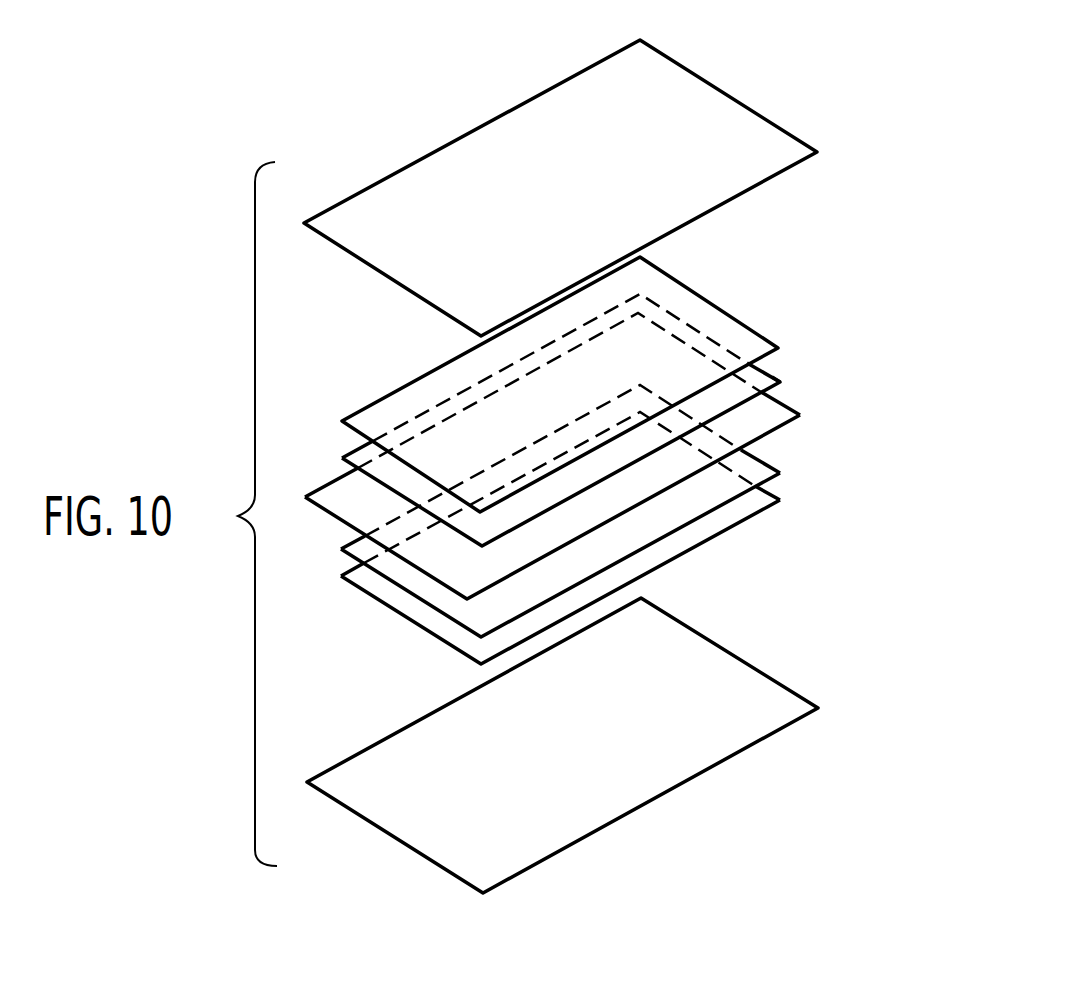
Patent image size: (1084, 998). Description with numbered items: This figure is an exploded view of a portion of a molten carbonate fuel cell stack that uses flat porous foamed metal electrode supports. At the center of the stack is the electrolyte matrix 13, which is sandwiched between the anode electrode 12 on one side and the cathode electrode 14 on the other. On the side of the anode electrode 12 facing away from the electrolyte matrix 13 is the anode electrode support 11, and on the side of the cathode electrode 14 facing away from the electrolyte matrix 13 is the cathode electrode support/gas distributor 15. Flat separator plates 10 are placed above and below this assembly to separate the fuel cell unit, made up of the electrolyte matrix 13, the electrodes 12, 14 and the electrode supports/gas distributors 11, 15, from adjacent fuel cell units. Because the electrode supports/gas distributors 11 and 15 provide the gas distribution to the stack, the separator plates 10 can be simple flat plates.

The separator plate 10 is at (733, 97).
The anode electrode support 11 is at (737, 319).
The anode electrode 12 is at (772, 372).
The electrolyte matrix 13 is at (793, 412).
The cathode electrode 14 is at (765, 462).
The cathode electrode support/gas distributor 15 is at (780, 498).